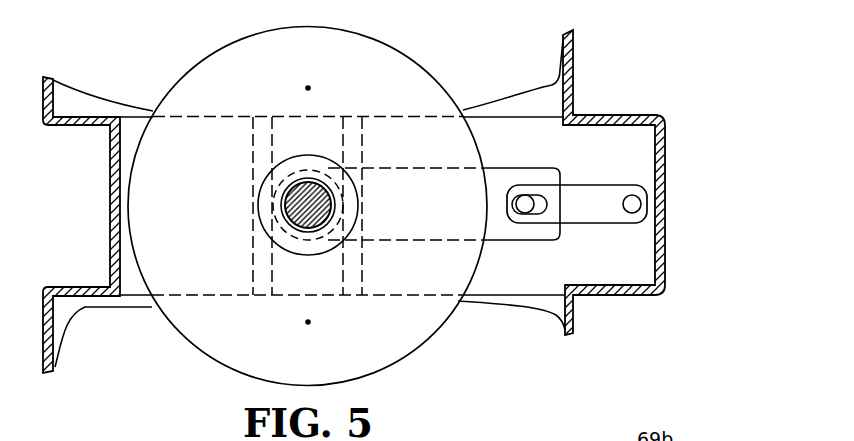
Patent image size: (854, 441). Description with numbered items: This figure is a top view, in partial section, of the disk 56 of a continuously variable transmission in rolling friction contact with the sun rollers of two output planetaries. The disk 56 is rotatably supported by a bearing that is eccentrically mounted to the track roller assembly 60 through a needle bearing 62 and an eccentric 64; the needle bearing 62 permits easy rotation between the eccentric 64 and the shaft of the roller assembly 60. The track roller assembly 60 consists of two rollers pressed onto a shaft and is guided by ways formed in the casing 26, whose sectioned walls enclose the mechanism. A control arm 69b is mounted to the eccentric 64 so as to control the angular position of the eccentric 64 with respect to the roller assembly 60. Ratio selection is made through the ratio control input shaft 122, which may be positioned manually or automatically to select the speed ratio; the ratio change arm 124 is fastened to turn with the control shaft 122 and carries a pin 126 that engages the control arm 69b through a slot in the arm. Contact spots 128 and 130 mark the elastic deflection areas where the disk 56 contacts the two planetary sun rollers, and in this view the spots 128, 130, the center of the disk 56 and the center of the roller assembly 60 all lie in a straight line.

The casing 26 is at (573, 78).
The disk 56 is at (367, 77).
The track roller assembly 60 is at (325, 228).
The needle bearing 62 is at (318, 183).
The eccentric 64 is at (317, 230).
The control arm 69b is at (503, 228).
The ratio control input shaft 122 is at (632, 203).
The ratio change arm 124 is at (585, 193).
The pin 126 is at (523, 203).
The contact spot 128 is at (308, 322).
The contact spot 130 is at (308, 88).